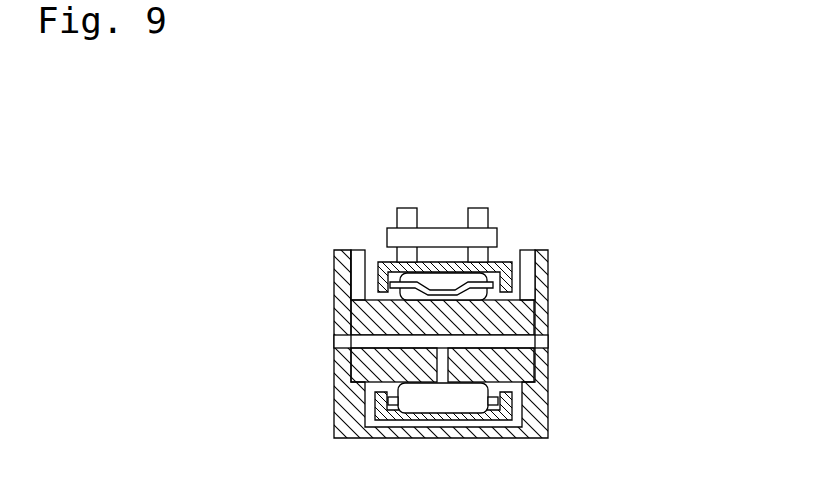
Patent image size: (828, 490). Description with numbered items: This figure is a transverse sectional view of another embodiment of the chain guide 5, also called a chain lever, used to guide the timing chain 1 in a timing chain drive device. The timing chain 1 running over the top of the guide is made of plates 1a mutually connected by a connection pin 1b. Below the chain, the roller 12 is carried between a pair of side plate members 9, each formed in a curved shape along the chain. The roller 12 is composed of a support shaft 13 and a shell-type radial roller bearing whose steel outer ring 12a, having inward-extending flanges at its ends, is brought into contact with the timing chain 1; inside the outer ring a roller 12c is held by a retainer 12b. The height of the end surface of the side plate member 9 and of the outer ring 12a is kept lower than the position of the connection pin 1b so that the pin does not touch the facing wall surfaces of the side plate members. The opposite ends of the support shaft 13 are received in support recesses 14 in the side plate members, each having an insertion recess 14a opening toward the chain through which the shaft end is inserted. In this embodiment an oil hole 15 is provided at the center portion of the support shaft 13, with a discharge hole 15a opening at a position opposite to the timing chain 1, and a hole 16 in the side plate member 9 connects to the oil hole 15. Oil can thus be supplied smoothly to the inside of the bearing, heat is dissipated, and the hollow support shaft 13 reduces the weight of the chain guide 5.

The timing chain 1 is at (457, 173).
The plates 1a is at (478, 220).
The connection pin 1b is at (437, 233).
The chain guide 5 is at (328, 263).
The side plate member 9 is at (343, 315).
The roller 12 is at (541, 239).
The steel outer ring 12a is at (505, 263).
The retainer 12b is at (478, 285).
The roller 12c is at (482, 297).
The support shaft 13 is at (487, 357).
The support recess 14 is at (362, 250).
The insertion recess 14a is at (358, 262).
The oil hole 15 is at (410, 340).
The discharge hole 15a is at (440, 372).
The hole 16 is at (538, 343).